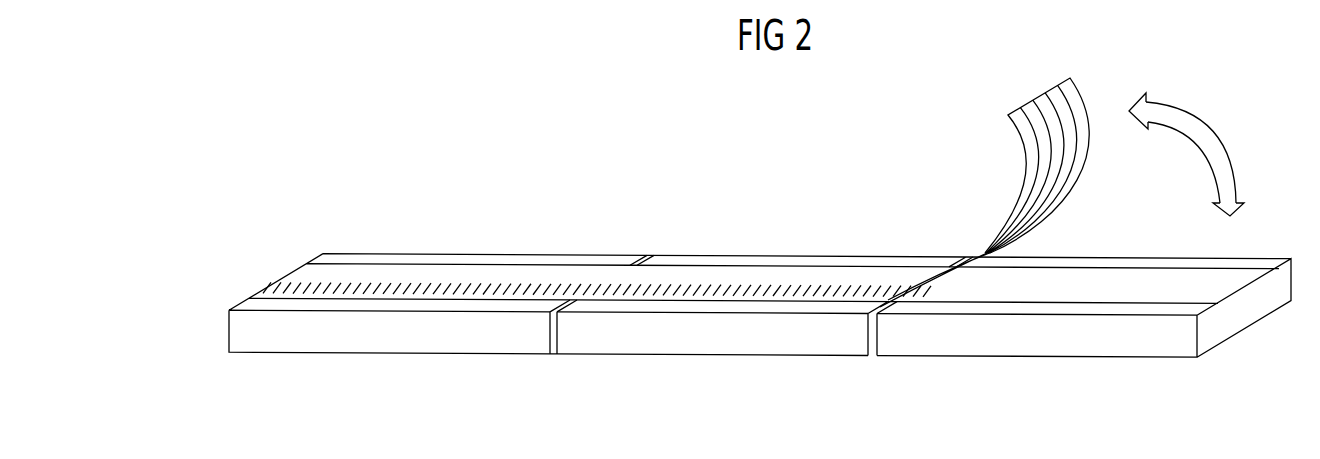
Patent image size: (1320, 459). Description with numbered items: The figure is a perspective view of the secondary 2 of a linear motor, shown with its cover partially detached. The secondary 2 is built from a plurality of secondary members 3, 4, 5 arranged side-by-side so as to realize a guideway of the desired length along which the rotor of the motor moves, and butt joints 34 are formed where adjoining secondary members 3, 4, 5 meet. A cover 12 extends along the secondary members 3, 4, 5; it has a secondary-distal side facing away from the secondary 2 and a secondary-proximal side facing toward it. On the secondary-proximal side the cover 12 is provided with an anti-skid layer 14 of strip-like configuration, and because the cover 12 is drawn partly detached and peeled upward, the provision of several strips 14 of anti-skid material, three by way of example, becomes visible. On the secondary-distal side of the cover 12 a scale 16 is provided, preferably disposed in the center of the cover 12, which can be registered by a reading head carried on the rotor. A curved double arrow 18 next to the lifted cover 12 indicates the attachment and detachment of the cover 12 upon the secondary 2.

The secondary 2 is at (221, 382).
The secondary member 3 is at (395, 341).
The butt joint 34 is at (554, 341).
The secondary member 4 is at (723, 341).
The secondary member 5 is at (1035, 341).
The scale 16 is at (280, 289).
The cover 12 is at (1088, 154).
The anti-skid layer 14 is at (1083, 74).
The double arrow 18 is at (1205, 140).